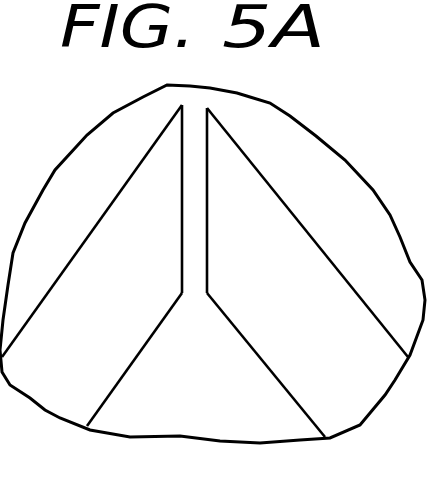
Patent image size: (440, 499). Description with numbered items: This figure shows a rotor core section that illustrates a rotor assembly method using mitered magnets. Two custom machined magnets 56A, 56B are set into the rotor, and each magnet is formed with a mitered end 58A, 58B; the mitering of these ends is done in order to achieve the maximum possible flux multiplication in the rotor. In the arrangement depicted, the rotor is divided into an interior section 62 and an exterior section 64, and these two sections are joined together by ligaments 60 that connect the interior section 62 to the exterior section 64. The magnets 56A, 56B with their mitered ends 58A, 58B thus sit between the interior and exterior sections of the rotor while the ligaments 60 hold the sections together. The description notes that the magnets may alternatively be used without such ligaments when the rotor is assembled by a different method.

The custom machined magnet 56A is at (150, 310).
The custom machined magnet 56B is at (300, 305).
The mitered end 58A is at (182, 198).
The mitered end 58B is at (207, 196).
The ligament 60 is at (195, 260).
The interior section 62 is at (220, 413).
The exterior section 64 is at (322, 177).